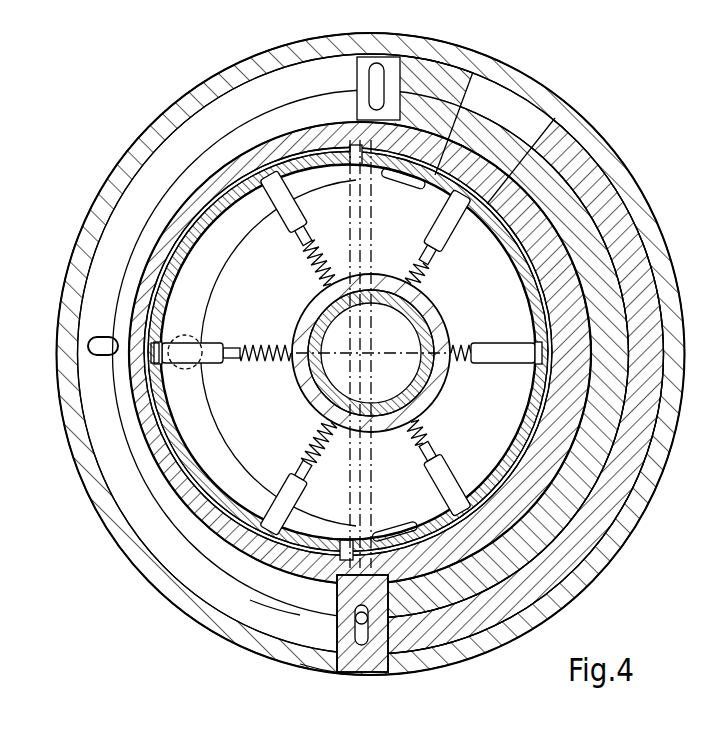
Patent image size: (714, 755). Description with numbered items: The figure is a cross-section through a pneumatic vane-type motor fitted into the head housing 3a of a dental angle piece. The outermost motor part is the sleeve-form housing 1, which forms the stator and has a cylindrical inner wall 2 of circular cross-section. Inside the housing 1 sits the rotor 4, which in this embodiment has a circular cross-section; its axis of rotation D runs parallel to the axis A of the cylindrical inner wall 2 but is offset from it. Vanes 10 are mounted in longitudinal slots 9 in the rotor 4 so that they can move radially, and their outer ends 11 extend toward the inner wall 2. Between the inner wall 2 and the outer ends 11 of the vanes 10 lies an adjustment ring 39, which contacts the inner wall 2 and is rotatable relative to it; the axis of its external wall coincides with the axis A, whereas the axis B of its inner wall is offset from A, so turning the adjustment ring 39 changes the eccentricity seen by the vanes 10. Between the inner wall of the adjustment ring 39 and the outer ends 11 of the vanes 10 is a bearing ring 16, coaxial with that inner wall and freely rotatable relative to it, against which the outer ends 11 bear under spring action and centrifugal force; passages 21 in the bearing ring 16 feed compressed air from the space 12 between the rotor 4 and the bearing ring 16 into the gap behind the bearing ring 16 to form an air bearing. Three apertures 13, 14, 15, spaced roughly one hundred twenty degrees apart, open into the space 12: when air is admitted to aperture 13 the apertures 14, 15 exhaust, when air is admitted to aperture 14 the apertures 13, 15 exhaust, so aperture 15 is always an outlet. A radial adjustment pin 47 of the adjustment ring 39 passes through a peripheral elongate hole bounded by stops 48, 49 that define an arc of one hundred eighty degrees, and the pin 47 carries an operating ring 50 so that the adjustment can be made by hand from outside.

The housing 1 is at (270, 110).
The cylindrical inner wall 2 is at (163, 230).
The head housing 3a is at (153, 160).
The rotor 4 is at (230, 433).
The longitudinal slots 9 is at (256, 366).
The vanes 10 is at (197, 337).
The outer ends of the vanes 11 is at (150, 357).
The space 12 is at (247, 180).
The aperture 13 is at (398, 540).
The aperture 14 is at (430, 180).
The aperture 15 is at (150, 380).
The bearing ring 16 is at (488, 200).
The passages 21 is at (160, 567).
The adjustment ring 39 is at (253, 613).
The adjustment pin 47 is at (361, 642).
The stop 48 is at (437, 67).
The stop 49 is at (383, 590).
The operating ring 50 is at (317, 653).
The axis of the cylindrical inner wall A is at (363, 350).
The axis of the adjustment ring inner wall B is at (350, 352).
The axis of rotation of the rotor D is at (375, 358).